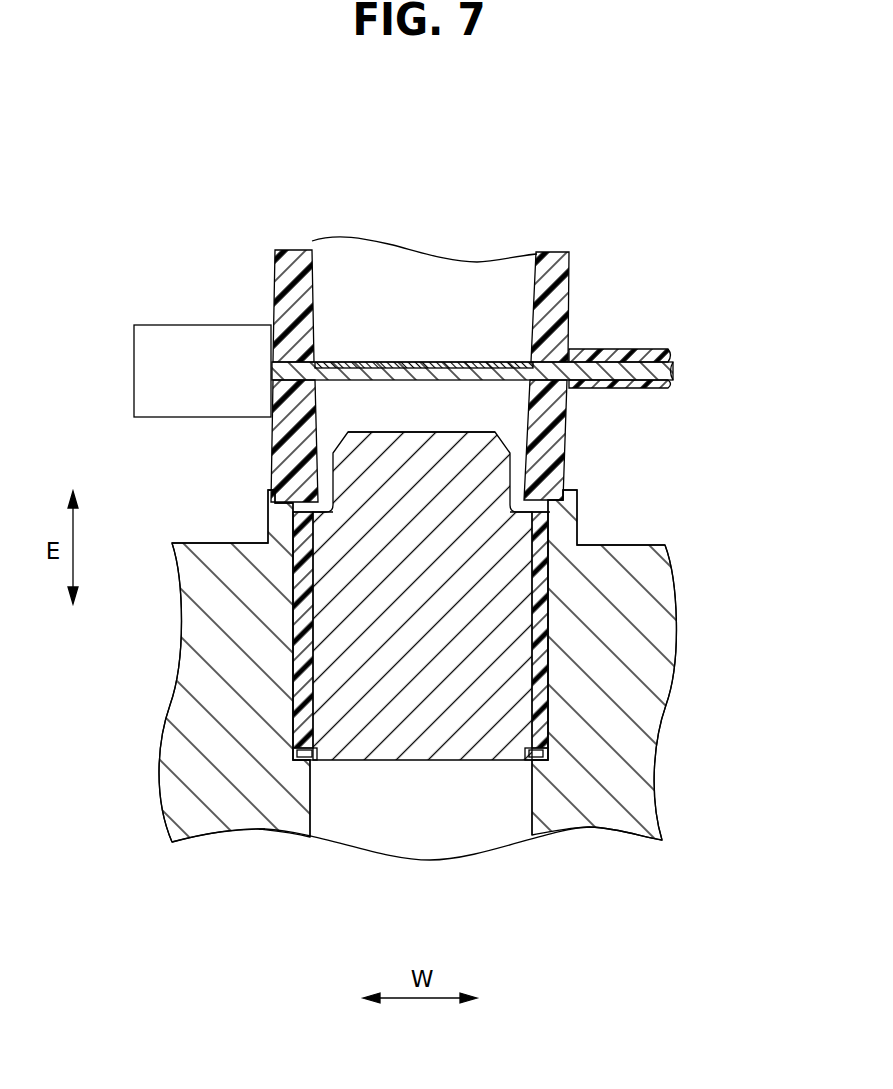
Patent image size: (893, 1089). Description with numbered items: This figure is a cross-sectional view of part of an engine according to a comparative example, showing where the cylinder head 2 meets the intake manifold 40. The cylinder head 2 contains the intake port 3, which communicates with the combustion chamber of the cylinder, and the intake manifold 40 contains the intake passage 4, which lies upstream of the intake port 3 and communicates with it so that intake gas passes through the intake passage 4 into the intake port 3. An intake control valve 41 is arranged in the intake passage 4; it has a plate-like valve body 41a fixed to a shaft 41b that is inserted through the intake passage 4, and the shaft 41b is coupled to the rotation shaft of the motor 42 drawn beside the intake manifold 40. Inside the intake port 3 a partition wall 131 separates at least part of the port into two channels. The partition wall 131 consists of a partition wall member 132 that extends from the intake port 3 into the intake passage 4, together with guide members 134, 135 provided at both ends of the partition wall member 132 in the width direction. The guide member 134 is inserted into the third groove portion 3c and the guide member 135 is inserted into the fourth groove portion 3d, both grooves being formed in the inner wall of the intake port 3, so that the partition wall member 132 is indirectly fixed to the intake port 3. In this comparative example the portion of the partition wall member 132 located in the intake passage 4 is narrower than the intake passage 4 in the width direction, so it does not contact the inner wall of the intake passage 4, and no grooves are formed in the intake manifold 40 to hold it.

The cylinder head 2 is at (655, 768).
The intake port 3 is at (423, 862).
The third groove portion 3c is at (312, 755).
The fourth groove portion 3d is at (528, 760).
The intake passage 4 is at (423, 262).
The intake manifold 40 is at (568, 280).
The intake control valve 41 is at (449, 352).
The valve body 41a is at (491, 362).
The shaft 41b is at (673, 366).
The motor 42 is at (202, 325).
The partition wall 131 is at (354, 420).
The partition wall member 132 is at (403, 443).
The guide member 134 is at (293, 713).
The guide member 135 is at (550, 731).